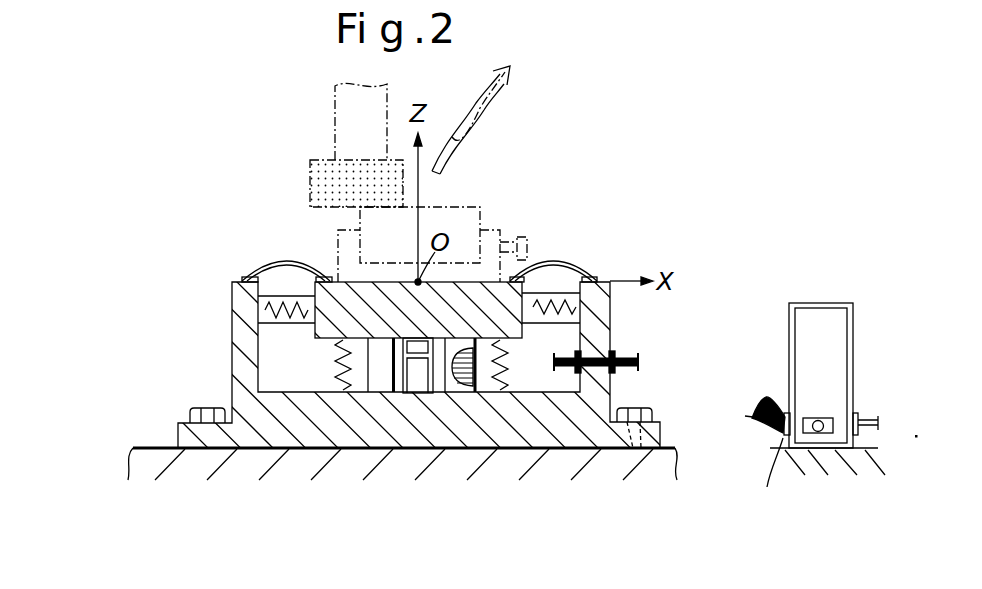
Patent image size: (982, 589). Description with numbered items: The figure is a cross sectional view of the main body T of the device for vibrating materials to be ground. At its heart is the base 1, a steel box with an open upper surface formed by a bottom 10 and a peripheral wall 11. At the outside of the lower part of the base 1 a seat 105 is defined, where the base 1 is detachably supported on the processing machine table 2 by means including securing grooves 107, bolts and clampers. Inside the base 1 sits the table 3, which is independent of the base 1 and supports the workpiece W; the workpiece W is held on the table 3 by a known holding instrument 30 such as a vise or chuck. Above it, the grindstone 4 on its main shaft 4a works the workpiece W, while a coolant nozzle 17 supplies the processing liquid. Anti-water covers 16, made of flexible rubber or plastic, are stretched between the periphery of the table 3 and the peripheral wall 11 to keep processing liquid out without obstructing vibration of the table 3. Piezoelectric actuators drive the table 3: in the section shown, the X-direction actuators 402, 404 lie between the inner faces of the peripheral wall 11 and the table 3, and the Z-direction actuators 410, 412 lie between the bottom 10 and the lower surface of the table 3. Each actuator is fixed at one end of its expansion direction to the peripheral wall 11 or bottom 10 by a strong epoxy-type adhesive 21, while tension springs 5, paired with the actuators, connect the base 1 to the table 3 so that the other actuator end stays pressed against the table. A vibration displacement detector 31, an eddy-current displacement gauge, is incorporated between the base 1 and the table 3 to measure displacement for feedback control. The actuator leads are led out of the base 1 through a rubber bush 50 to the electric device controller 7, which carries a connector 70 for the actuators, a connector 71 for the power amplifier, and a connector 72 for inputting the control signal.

The base 1 is at (248, 372).
The processing machine table 2 is at (593, 462).
The table 3 is at (534, 272).
The grindstone 4 is at (311, 176).
The main shaft 4a is at (340, 111).
The tension spring 5 is at (258, 331).
The electric device controller 7 is at (820, 318).
The bottom 10 is at (540, 389).
The peripheral wall 11 is at (592, 385).
The anti-water cover 16 is at (558, 268).
The coolant nozzle 17 is at (452, 137).
The strong adhesive 21 is at (273, 271).
The holding instrument 30 is at (498, 222).
The vibration displacement detector 31 is at (418, 383).
The rubber bush 50 is at (613, 340).
The connector 70 is at (783, 438).
The connector 71 is at (858, 407).
The connector 72 is at (825, 434).
The seat 105 is at (190, 430).
The securing groove 107 is at (641, 449).
The piezoelectric actuator 402 is at (290, 322).
The piezoelectric actuator 404 is at (556, 318).
The piezoelectric actuator 410 is at (372, 368).
The piezoelectric actuator 412 is at (450, 372).
The main body T is at (226, 282).
The workpiece W is at (468, 208).